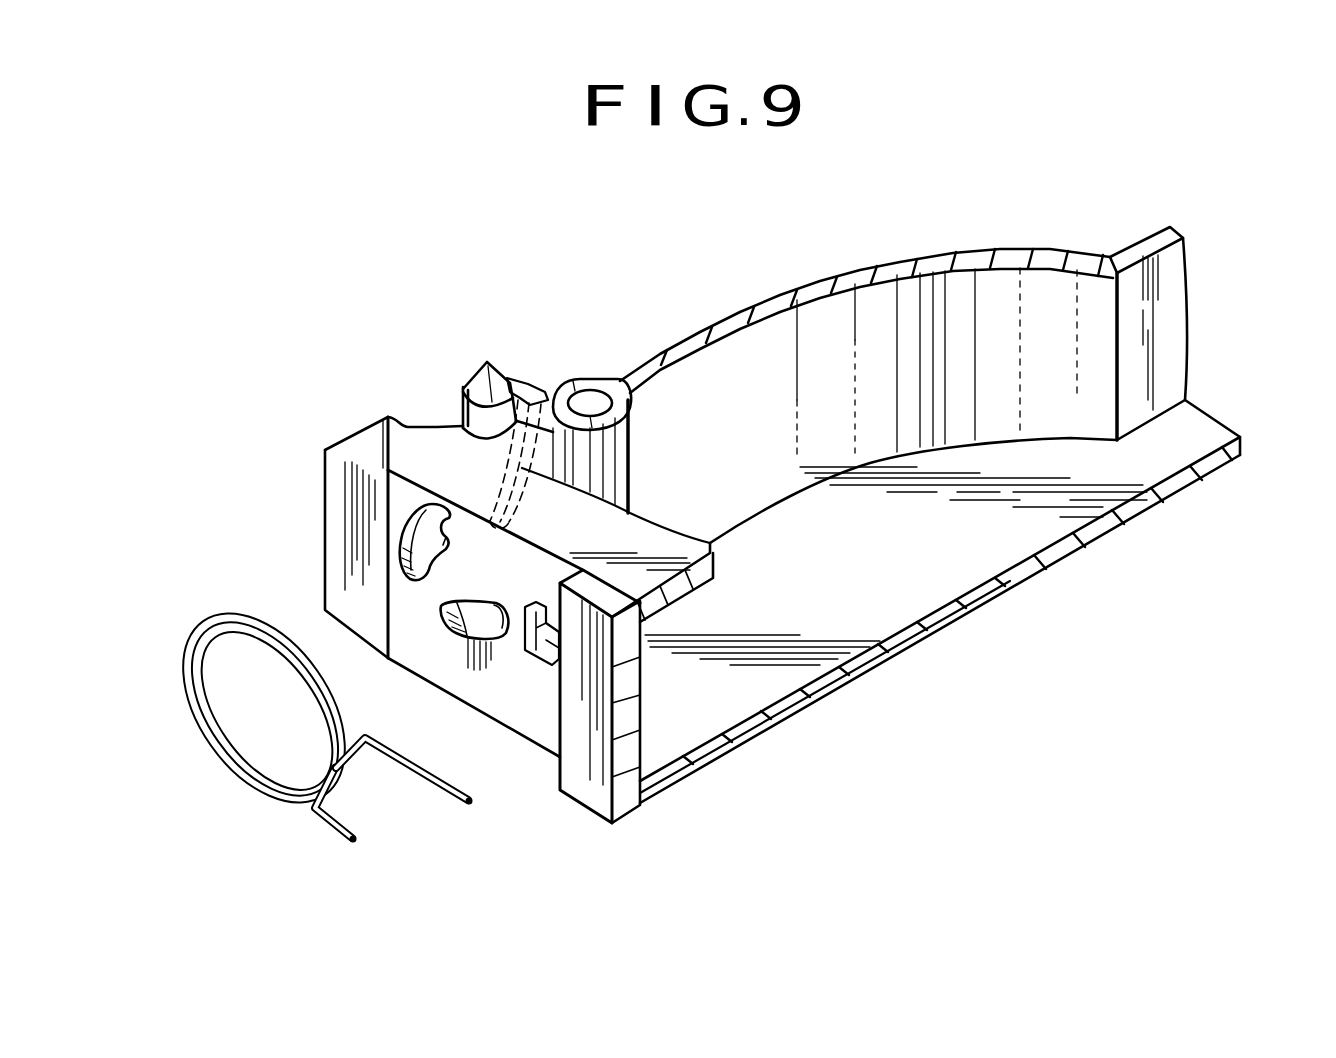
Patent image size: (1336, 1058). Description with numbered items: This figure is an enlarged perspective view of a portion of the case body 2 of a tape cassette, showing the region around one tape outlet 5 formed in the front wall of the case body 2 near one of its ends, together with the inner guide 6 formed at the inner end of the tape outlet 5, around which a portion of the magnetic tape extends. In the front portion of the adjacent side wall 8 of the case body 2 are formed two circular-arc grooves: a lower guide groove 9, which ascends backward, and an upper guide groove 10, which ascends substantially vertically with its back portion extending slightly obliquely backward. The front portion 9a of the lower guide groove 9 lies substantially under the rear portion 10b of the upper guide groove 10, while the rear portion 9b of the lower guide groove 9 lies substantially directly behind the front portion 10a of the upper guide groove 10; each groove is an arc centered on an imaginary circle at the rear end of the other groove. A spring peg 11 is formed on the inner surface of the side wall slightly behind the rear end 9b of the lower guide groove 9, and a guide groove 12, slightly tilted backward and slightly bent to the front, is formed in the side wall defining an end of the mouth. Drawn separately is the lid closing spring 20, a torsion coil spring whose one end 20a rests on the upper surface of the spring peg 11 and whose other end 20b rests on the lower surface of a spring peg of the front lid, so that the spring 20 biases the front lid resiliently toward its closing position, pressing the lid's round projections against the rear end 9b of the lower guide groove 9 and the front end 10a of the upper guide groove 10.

The case body 2 is at (873, 622).
The tape outlet 5 is at (447, 415).
The inner guide 6 is at (463, 418).
The side wall 8 is at (587, 785).
The lower guide groove 9 is at (470, 640).
The front portion of lower guide groove 9a is at (448, 618).
The rear portion of lower guide groove 9b is at (496, 606).
The upper guide groove 10 is at (423, 537).
The front portion of upper guide groove 10a is at (405, 568).
The rear portion of upper guide groove 10b is at (442, 540).
The spring peg 11 is at (541, 600).
The guide groove 12 is at (520, 388).
The lid closing spring 20 is at (311, 714).
The one end of lid closing spring 20a is at (433, 780).
The other end of lid closing spring 20b is at (337, 828).